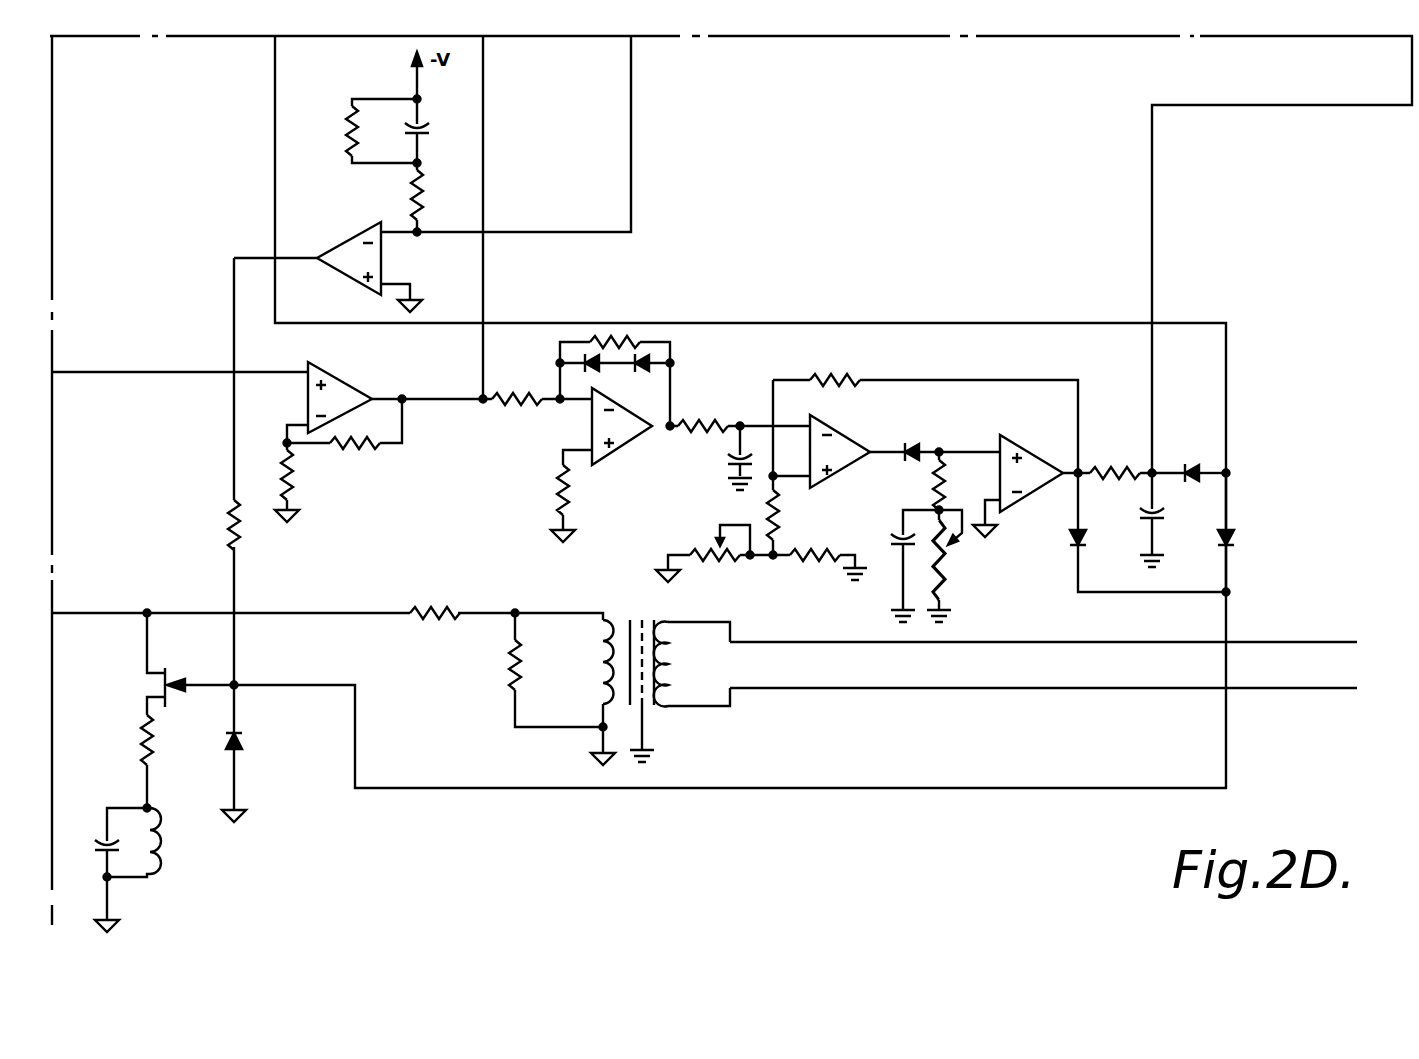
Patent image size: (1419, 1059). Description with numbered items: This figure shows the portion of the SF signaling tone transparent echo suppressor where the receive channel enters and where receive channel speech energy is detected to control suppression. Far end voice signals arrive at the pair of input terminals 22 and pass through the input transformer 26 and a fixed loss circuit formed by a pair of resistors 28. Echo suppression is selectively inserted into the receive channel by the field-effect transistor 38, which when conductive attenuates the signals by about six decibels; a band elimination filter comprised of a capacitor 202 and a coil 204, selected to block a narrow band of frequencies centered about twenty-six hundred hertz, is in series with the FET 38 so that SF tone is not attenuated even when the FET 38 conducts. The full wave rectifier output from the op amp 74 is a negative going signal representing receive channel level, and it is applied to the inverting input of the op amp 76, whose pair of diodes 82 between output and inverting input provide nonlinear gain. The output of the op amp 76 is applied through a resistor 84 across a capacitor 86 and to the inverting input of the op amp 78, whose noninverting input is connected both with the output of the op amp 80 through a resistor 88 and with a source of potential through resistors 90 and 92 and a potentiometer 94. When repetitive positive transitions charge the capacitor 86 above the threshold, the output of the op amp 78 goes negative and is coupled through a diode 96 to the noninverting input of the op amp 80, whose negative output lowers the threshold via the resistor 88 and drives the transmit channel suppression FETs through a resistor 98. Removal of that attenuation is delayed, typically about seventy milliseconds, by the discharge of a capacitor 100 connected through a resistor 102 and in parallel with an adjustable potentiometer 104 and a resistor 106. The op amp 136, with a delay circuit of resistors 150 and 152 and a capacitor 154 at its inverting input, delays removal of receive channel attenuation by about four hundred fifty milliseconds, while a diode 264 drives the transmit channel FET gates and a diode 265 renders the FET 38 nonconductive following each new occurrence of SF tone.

The input terminals 22 is at (1355, 641).
The input transformer 26 is at (640, 607).
The resistors 28 is at (513, 660).
The field-effect transistor 38 is at (172, 672).
The op amp 74 is at (348, 390).
The op amp 76 is at (637, 446).
The op amp 78 is at (847, 434).
The op amp 80 is at (1033, 458).
The diodes 82 is at (646, 376).
The resistor 84 is at (704, 418).
The capacitor 86 is at (728, 466).
The resistor 88 is at (835, 378).
The resistor 90 is at (782, 510).
The resistor 92 is at (810, 562).
The potentiometer 94 is at (722, 560).
The diode 96 is at (914, 446).
The resistor 98 is at (1112, 462).
The capacitor 100 is at (890, 540).
The resistor 102 is at (932, 482).
The potentiometer 104 is at (952, 540).
The resistor 106 is at (946, 588).
The op amp 136 is at (352, 250).
The resistor 150 is at (350, 126).
The resistor 152 is at (412, 191).
The capacitor 154 is at (432, 133).
The capacitor 202 is at (103, 836).
The coil 204 is at (175, 848).
The diode 264 is at (1188, 458).
The diode 265 is at (1238, 540).